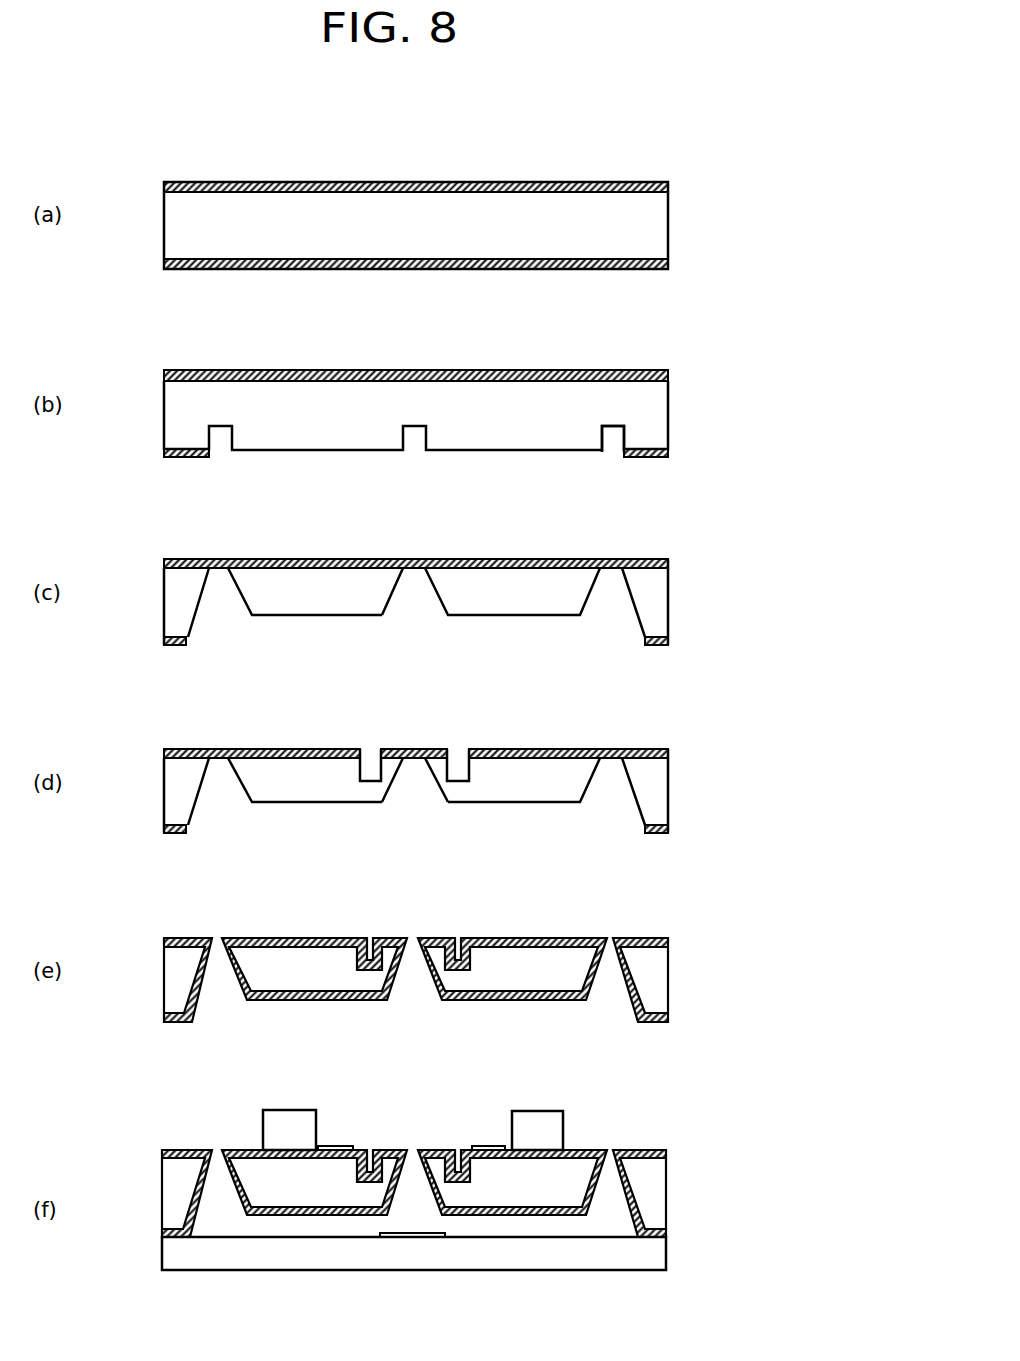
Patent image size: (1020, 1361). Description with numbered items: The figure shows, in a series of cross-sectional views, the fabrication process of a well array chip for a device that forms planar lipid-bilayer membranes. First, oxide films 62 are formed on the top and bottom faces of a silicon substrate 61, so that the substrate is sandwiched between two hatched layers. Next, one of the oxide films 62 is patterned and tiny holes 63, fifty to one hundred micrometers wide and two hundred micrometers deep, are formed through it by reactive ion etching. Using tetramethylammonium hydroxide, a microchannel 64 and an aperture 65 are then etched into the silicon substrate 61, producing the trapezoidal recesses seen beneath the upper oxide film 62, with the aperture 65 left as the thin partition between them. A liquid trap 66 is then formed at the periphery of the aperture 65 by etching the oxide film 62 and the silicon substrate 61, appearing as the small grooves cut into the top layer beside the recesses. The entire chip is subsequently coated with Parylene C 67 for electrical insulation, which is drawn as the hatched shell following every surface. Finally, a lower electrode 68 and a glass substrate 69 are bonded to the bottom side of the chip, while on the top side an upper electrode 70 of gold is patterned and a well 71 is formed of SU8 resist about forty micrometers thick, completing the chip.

The silicon substrate 61 is at (668, 225).
The oxide film 62 is at (668, 185).
The tiny hole 63 is at (612, 447).
The microchannel 64 is at (523, 615).
The aperture 65 is at (415, 585).
The liquid trap 66 is at (370, 770).
The Parylene C 67 is at (648, 935).
The lower electrode 68 is at (413, 1232).
The glass substrate 69 is at (652, 1254).
The upper electrode 70 is at (490, 1146).
The well 71 is at (565, 1123).